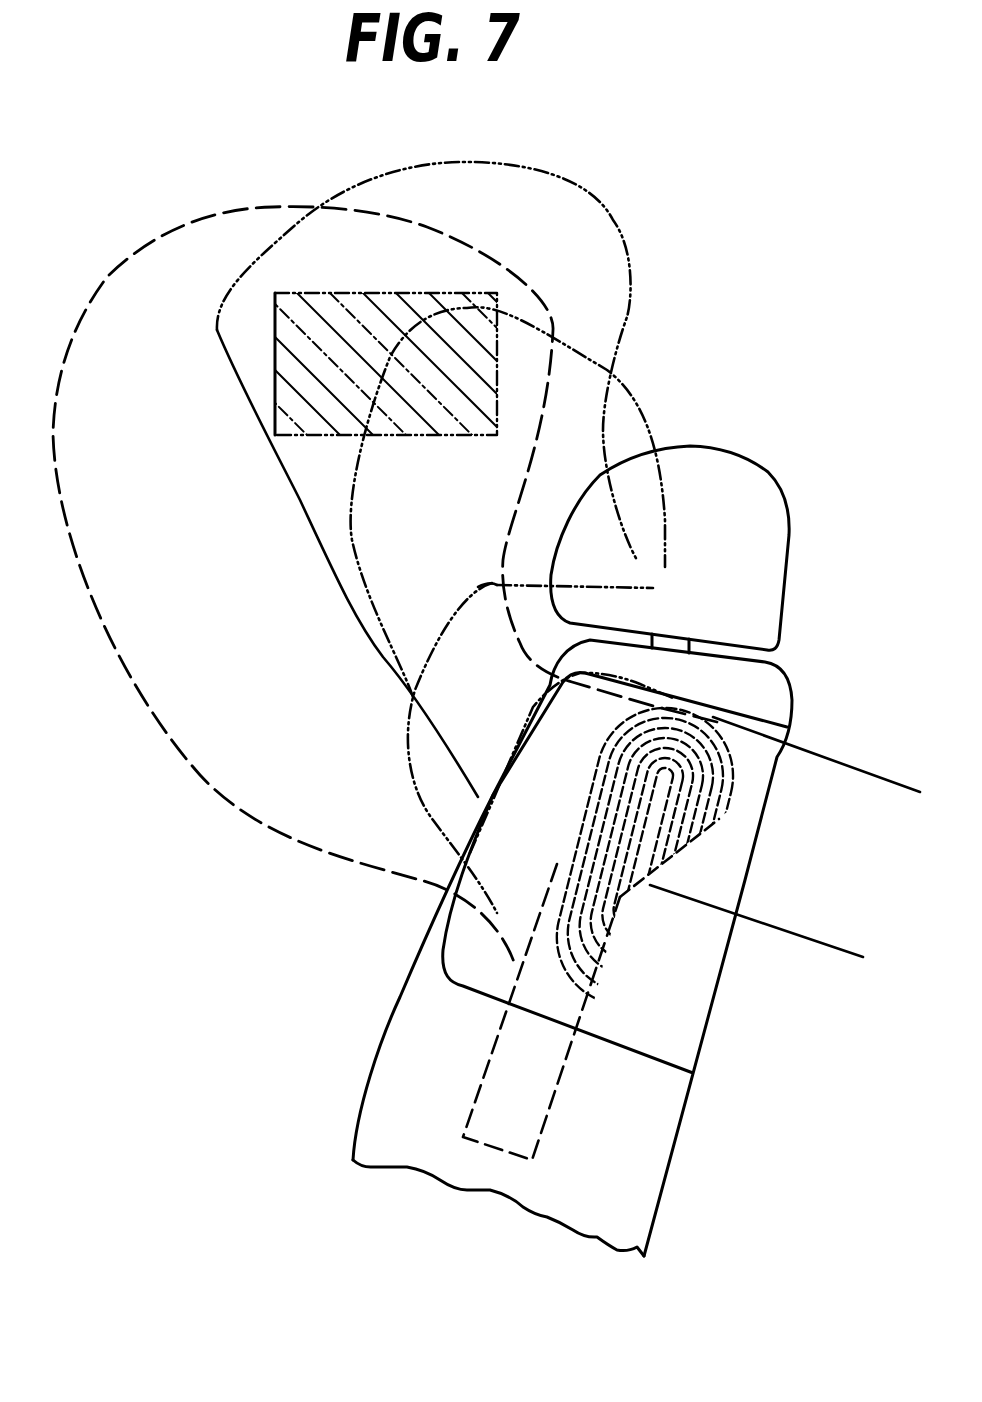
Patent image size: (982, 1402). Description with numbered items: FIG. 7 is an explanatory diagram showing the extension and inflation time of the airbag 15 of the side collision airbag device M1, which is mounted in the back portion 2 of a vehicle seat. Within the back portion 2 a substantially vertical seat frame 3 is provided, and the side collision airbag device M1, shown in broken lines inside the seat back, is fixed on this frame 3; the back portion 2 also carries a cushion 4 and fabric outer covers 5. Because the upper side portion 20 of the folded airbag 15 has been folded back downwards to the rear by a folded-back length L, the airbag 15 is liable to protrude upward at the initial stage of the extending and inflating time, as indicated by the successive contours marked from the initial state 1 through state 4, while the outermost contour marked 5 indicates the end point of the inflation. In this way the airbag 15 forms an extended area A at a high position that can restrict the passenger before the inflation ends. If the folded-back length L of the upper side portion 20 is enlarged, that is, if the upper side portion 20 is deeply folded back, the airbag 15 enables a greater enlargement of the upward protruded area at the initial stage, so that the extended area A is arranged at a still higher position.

The initial inflation state 1 is at (571, 763).
The back portion 2 is at (692, 1162).
The seat frame 3 is at (397, 364).
The cushion 4 is at (441, 459).
The outer cover 5 is at (385, 585).
The airbag 15 is at (175, 800).
The upper side portion 20 is at (723, 818).
The extended area A is at (330, 293).
The side collision airbag device M1 is at (575, 1142).
The folded-back length L is at (895, 785).